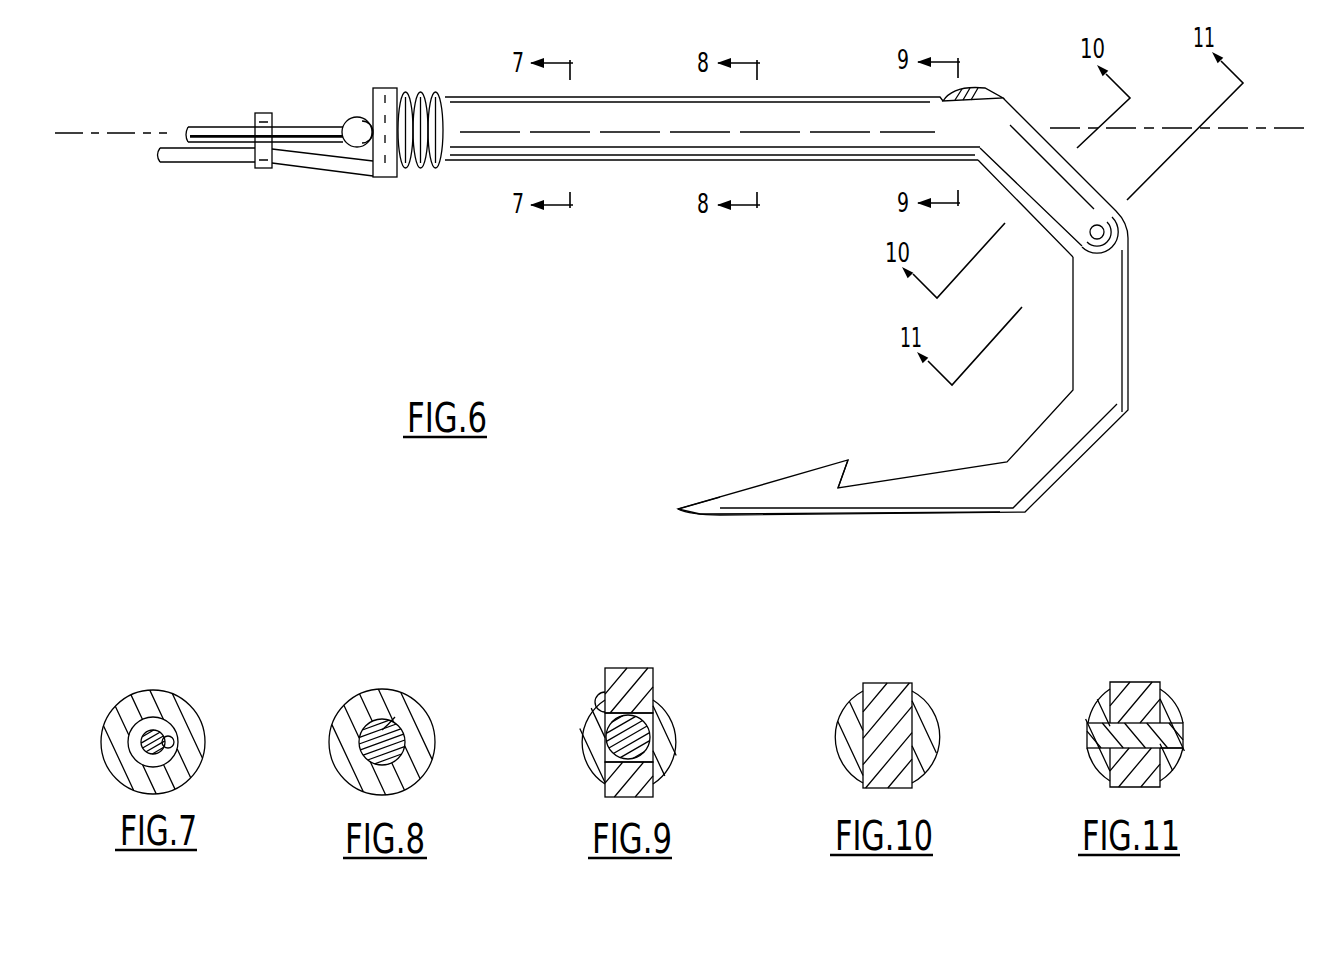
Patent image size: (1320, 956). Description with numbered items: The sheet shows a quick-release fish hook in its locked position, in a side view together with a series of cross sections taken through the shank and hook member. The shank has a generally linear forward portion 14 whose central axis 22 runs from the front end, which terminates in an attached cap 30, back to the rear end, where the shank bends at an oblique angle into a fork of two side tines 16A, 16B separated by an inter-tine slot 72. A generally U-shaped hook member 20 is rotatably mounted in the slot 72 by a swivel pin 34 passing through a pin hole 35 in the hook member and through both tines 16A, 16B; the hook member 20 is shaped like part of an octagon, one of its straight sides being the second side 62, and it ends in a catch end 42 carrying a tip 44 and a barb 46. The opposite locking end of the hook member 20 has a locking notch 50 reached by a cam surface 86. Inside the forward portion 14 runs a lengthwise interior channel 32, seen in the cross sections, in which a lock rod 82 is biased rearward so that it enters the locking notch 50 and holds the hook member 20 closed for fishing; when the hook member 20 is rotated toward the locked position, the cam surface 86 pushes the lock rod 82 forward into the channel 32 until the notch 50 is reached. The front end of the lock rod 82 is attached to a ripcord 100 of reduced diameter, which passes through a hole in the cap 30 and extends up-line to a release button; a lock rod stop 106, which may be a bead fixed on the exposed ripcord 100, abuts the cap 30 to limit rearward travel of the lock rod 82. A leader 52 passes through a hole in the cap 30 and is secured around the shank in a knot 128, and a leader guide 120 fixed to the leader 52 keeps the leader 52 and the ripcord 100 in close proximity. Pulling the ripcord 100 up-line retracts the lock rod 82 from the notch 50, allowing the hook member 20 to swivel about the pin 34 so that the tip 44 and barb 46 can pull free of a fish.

In FIG. 6, the forward portion 14 is at (592, 147).
In FIG. 7, the forward portion 14 is at (160, 705).
In FIG. 8, the forward portion 14 is at (378, 695).
In FIG. 9, the forward portion 14 is at (585, 738).
In FIG. 10, the side tine 16A is at (927, 722).
In FIG. 11, the side tine 16A is at (1173, 710).
In FIG. 6, the side tine 16B is at (1087, 207).
In FIG. 10, the side tine 16B is at (852, 708).
In FIG. 11, the side tine 16B is at (1098, 707).
In FIG. 6, the hook member 20 is at (1110, 373).
In FIG. 6, the central axis 22 is at (1253, 128).
In FIG. 6, the cap 30 is at (387, 92).
In FIG. 7, the interior channel 32 is at (174, 741).
In FIG. 8, the interior channel 32 is at (395, 717).
In FIG. 6, the swivel pin 34 is at (1103, 231).
In FIG. 11, the swivel pin 34 is at (1178, 732).
In FIG. 6, the pin hole 35 is at (1101, 252).
In FIG. 11, the pin hole 35 is at (1183, 772).
In FIG. 6, the catch end 42 is at (787, 508).
In FIG. 6, the tip 44 is at (695, 508).
In FIG. 6, the barb 46 is at (828, 478).
In FIG. 9, the locking notch 50 is at (613, 705).
In FIG. 6, the leader 52 is at (173, 162).
In FIG. 6, the second side 62 is at (1032, 115).
In FIG. 9, the inter-tine slot 72 is at (592, 780).
In FIG. 10, the inter-tine slot 72 is at (872, 748).
In FIG. 11, the inter-tine slot 72 is at (1098, 768).
In FIG. 8, the lock rod 82 is at (413, 767).
In FIG. 9, the lock rod 82 is at (660, 770).
In FIG. 6, the cam surface 86 is at (985, 86).
In FIG. 9, the cam surface 86 is at (630, 668).
In FIG. 6, the ripcord 100 is at (240, 132).
In FIG. 7, the ripcord 100 is at (140, 738).
In FIG. 6, the lock rod stop 106 is at (352, 120).
In FIG. 6, the leader guide 120 is at (267, 168).
In FIG. 6, the knot 128 is at (427, 163).